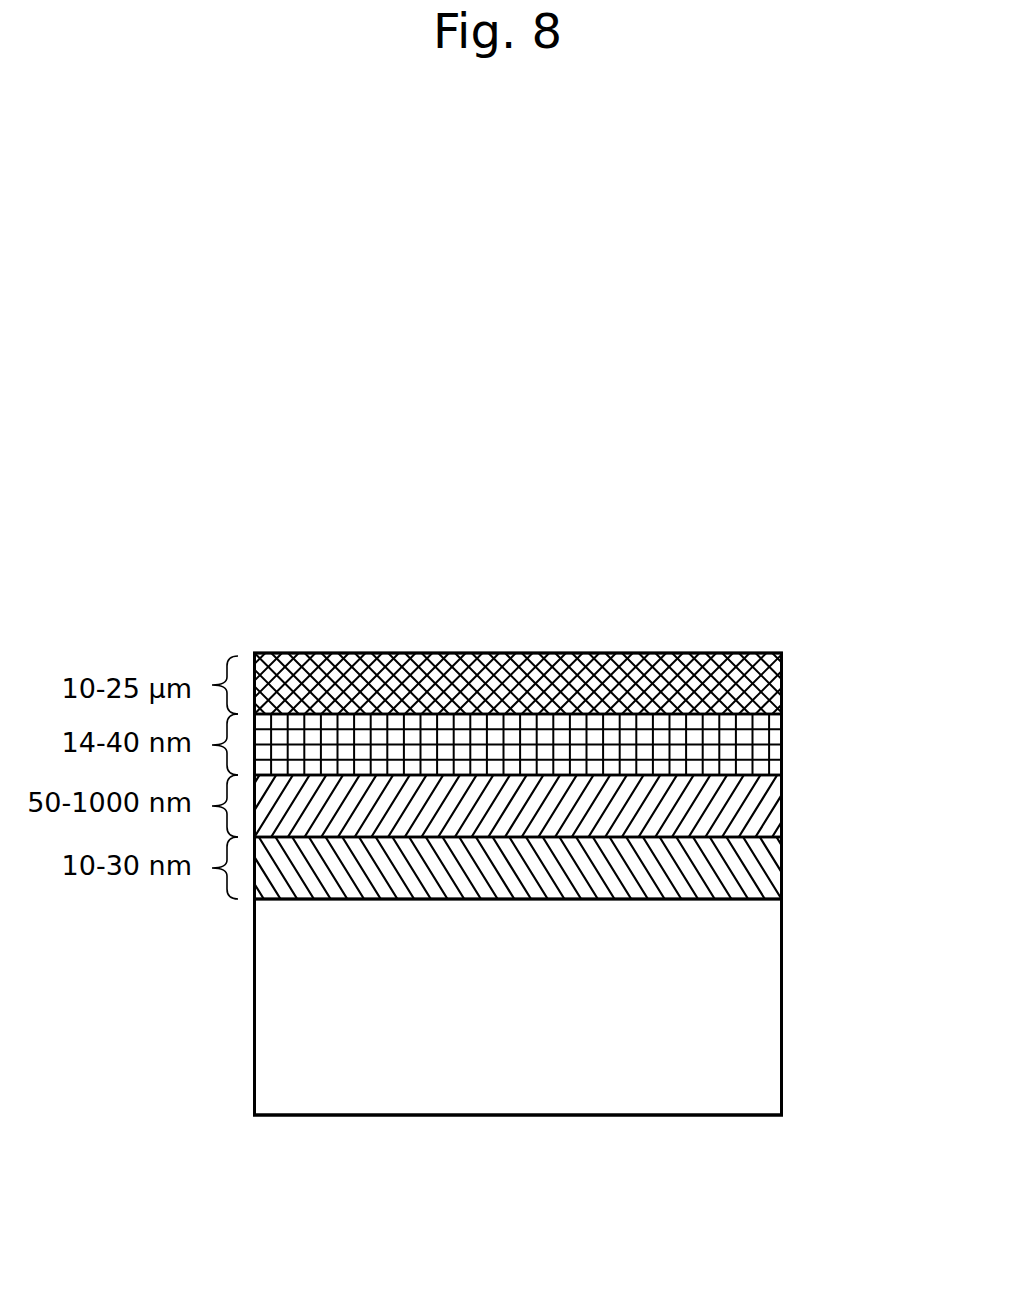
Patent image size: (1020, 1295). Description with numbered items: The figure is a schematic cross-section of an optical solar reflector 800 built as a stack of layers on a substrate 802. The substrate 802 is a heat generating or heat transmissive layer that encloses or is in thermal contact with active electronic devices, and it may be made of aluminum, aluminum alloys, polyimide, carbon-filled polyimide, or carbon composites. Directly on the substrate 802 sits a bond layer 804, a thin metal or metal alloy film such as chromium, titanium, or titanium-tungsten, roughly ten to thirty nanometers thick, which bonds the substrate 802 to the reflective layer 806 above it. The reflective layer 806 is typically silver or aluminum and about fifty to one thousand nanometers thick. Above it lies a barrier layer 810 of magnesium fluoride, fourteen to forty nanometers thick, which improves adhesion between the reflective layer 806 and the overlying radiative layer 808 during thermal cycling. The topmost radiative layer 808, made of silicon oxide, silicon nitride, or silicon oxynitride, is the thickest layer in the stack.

The optical solar reflector 800 is at (486, 516).
The substrate 802 is at (782, 988).
The bond layer 804 is at (782, 863).
The reflective layer 806 is at (782, 798).
The radiative layer 808 is at (782, 678).
The barrier layer 810 is at (782, 735).